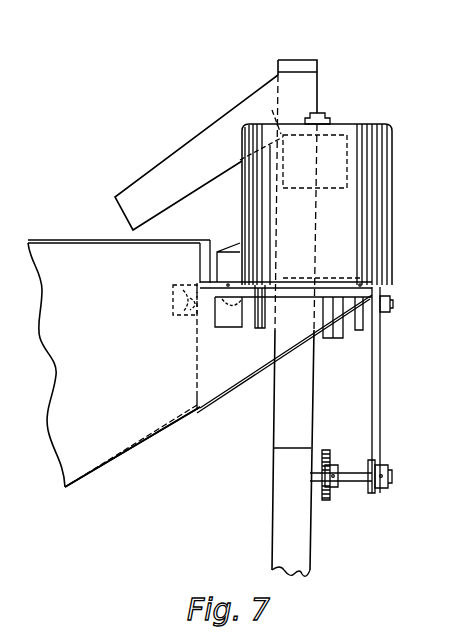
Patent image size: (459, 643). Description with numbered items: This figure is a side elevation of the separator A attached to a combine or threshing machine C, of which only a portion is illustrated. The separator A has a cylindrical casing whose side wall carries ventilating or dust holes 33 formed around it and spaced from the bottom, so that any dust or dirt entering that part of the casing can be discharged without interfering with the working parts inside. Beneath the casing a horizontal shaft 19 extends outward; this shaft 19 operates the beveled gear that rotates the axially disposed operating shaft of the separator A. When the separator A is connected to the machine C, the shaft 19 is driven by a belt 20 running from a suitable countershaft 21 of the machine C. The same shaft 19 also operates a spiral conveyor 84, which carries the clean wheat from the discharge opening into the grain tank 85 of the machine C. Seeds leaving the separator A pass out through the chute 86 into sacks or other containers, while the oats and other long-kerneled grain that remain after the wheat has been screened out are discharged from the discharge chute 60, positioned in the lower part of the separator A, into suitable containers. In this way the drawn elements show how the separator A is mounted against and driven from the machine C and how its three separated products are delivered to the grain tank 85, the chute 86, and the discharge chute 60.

The separator A is at (392, 147).
The combine or threshing machine C is at (58, 248).
The ventilating or dust holes 33 is at (458, 250).
The horizontal shaft 19 is at (393, 305).
The belt 20 is at (382, 430).
The countershaft 21 is at (348, 477).
The discharge chute 60 is at (225, 327).
The spiral conveyor 84 is at (183, 283).
The grain tank 85 is at (112, 455).
The chute 86 is at (327, 338).